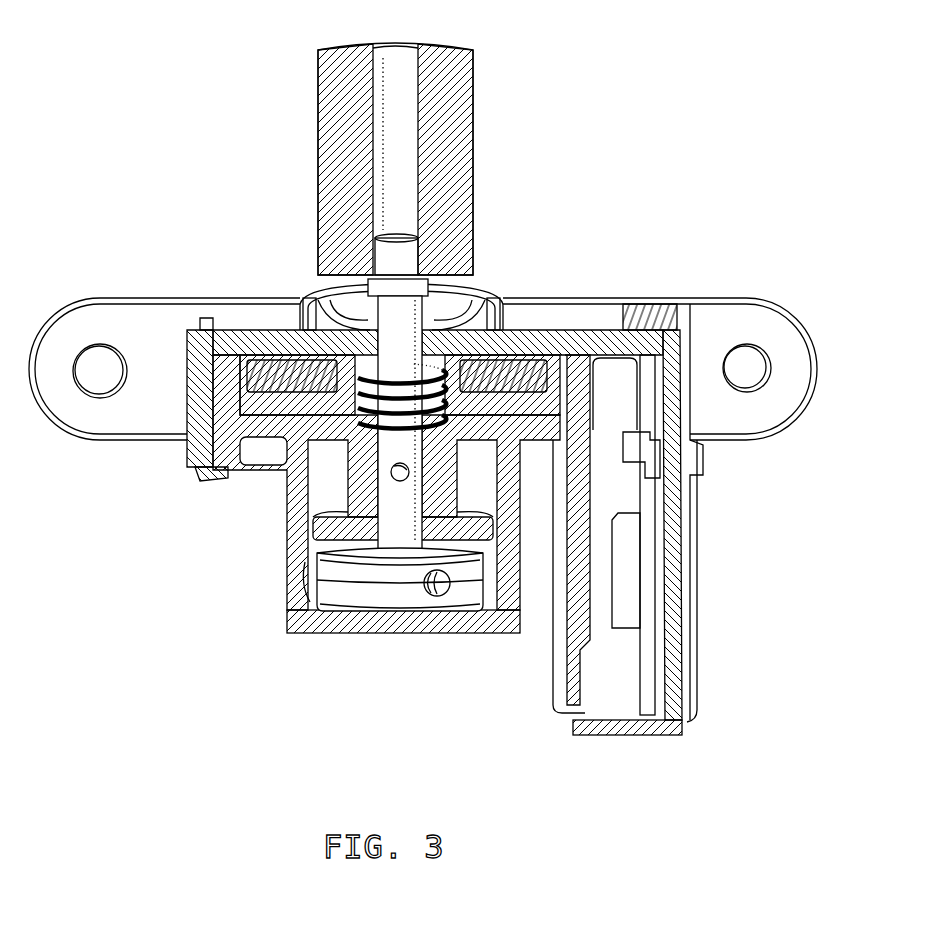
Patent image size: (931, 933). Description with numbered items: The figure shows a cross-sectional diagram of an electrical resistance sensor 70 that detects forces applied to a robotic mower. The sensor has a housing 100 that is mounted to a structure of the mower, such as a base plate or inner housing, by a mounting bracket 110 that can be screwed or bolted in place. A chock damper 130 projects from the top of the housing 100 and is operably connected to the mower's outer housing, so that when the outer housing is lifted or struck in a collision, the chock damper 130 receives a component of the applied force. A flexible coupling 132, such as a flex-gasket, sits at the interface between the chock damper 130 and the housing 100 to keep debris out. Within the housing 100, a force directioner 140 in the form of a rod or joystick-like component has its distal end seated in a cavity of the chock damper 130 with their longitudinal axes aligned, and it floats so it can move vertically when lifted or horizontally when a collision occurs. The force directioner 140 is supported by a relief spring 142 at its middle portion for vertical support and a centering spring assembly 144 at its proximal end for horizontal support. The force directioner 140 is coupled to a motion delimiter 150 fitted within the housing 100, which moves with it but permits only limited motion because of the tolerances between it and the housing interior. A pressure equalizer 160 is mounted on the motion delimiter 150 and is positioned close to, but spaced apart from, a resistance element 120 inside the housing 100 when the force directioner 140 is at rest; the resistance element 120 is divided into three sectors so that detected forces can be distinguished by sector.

The electrical resistance sensor 70 is at (677, 81).
The housing 100 is at (505, 572).
The mounting bracket 110 is at (716, 330).
The resistance element 120 is at (520, 355).
The chock damper 130 is at (345, 80).
The flexible coupling 132 is at (320, 290).
The force directioner 140 is at (395, 345).
The relief spring 142 is at (497, 480).
The centering spring assembly 144 is at (445, 603).
The motion delimiter 150 is at (445, 425).
The pressure equalizer 160 is at (277, 360).